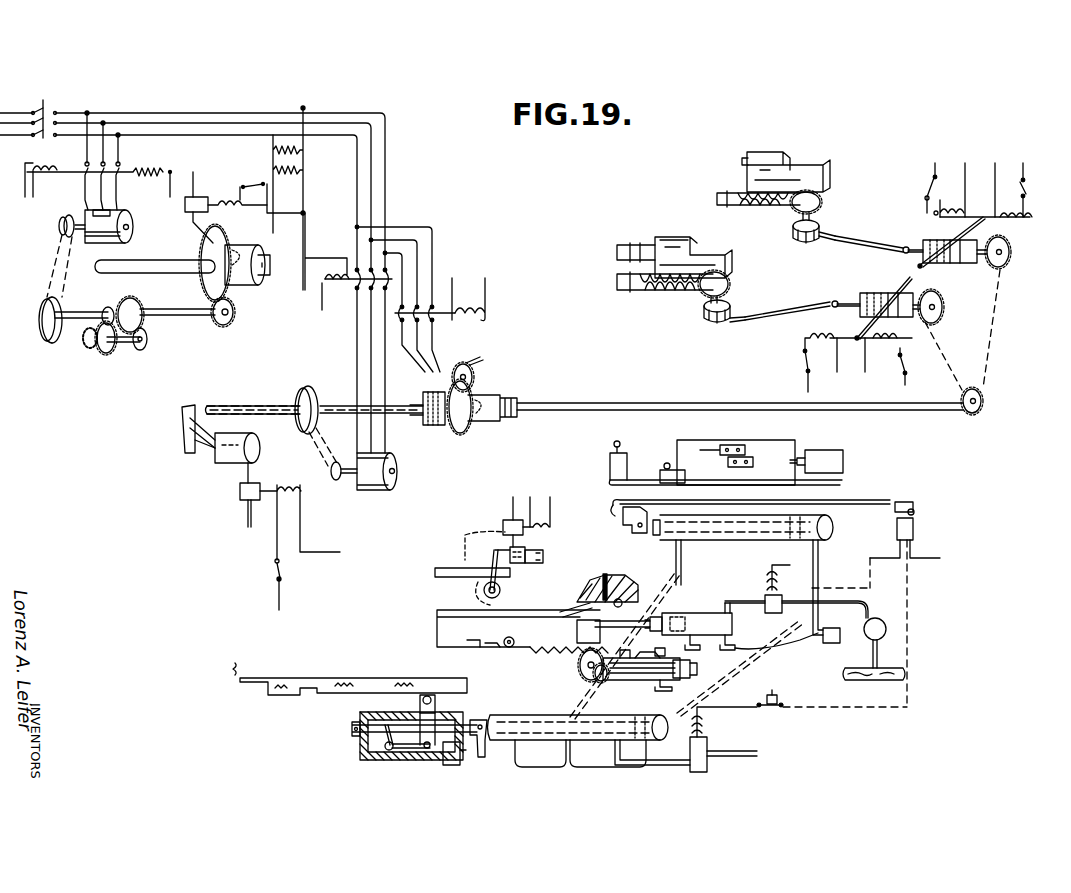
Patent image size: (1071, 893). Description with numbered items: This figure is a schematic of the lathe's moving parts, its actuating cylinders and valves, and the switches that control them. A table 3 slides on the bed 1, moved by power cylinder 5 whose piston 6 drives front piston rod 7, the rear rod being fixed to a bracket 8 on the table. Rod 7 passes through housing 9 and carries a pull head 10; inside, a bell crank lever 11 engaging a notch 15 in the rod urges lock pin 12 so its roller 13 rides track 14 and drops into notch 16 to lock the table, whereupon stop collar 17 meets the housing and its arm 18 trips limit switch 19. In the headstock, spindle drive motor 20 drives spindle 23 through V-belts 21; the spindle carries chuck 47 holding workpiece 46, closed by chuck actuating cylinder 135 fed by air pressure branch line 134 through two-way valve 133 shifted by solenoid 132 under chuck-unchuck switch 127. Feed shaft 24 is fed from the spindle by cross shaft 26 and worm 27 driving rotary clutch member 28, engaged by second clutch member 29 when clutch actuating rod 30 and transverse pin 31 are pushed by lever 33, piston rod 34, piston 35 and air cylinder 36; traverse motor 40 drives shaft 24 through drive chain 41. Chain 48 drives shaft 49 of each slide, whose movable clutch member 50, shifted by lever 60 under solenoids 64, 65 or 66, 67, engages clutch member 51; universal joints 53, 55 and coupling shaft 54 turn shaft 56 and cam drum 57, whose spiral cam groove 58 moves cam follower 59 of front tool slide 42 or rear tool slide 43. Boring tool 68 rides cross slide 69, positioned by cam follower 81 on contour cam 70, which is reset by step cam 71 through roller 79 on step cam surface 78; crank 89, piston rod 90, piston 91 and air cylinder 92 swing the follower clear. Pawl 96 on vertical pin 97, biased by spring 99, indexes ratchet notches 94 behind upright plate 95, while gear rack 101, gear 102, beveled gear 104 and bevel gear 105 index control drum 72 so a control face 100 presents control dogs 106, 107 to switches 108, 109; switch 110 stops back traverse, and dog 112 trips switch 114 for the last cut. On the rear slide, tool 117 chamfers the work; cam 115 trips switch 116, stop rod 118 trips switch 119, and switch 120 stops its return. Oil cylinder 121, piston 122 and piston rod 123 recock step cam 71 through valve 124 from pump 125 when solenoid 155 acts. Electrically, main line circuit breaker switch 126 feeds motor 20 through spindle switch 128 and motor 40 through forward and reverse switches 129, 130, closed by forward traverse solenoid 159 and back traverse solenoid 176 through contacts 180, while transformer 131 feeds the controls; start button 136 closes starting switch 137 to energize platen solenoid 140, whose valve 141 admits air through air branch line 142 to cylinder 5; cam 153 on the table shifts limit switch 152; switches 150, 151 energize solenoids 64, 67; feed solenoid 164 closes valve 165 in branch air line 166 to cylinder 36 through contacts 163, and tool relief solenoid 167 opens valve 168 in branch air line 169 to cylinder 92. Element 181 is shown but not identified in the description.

The bed 1 is at (238, 680).
The table 3 is at (900, 500).
The power cylinder 5 is at (722, 542).
The piston 6 is at (834, 527).
The front piston rod 7 is at (640, 536).
The bracket 8 is at (612, 516).
The housing 9 is at (362, 755).
The pull head 10 is at (352, 724).
The bell crank lever 11 is at (400, 752).
The lock pin 12 is at (428, 750).
The roller 13 is at (423, 694).
The track 14 is at (365, 677).
The notch 15 is at (387, 724).
The notch 16 is at (305, 697).
The stop collar 17 is at (487, 722).
The arm 18 is at (482, 757).
The limit switch 19 is at (454, 766).
The spindle drive motor 20 is at (125, 212).
The V-belts 21 is at (50, 268).
The spindle 23 is at (165, 258).
The feed shaft 24 is at (251, 404).
The cross shaft 26 is at (485, 358).
The worm 27 is at (476, 377).
The rotary clutch member 28 is at (456, 435).
The second clutch member 29 is at (432, 392).
The clutch actuating rod 30 is at (200, 404).
The transverse pin 31 is at (418, 418).
The lever 33 is at (182, 428).
The piston rod 34 is at (205, 455).
The piston 35 is at (250, 436).
The air cylinder 36 is at (238, 468).
The traverse motor 40 is at (372, 492).
The drive chain 41 is at (315, 452).
The front tool slide 42 is at (727, 262).
The rear tool slide 43 is at (825, 178).
The workpiece 46 is at (268, 277).
The chuck 47 is at (240, 290).
The chain 48 is at (995, 320).
The shaft 49 is at (977, 262).
The movable clutch member 50 is at (960, 240).
The clutch member 51 is at (928, 242).
The universal joint 53 is at (900, 252).
The coupling shaft 54 is at (866, 242).
The universal joint 55 is at (838, 232).
The shaft 56 is at (818, 240).
The cam drum 57 is at (725, 190).
The spiral cam groove 58 is at (770, 206).
The cam follower 59 is at (790, 187).
The lever 60 is at (958, 231).
The clutch engage solenoid 64 is at (803, 340).
The solenoid 65 is at (883, 345).
The solenoid 66 is at (950, 192).
The clutch disengage solenoid 67 is at (1024, 224).
The boring tool 68 is at (630, 242).
The cross slide 69 is at (693, 236).
The contour cam 70 is at (440, 580).
The step cam 71 is at (437, 633).
The control drum 72 is at (632, 681).
The step cam surface 78 is at (485, 647).
The roller 79 is at (515, 647).
The cam follower 81 is at (483, 590).
The crank 89 is at (495, 555).
The piston rod 90 is at (505, 554).
The piston 91 is at (543, 553).
The air cylinder 92 is at (524, 563).
The ratchet notches 94 is at (540, 620).
The upright plate 95 is at (508, 620).
The pawl 96 is at (578, 602).
The vertical pin 97 is at (630, 582).
The spring 99 is at (612, 568).
The control faces 100 is at (622, 681).
The gear rack 101 is at (575, 650).
The gear 102 is at (582, 672).
The beveled gear 104 is at (596, 680).
The bevel gear 105 is at (621, 645).
The control dog 106 is at (645, 645).
The control dog 107 is at (667, 651).
The switch 108 is at (700, 612).
The switch 109 is at (778, 644).
The switch 110 is at (829, 643).
The dog 112 is at (667, 691).
The switch 114 is at (693, 667).
The cam 115 is at (742, 470).
The switch 116 is at (665, 481).
The tool 117 is at (745, 158).
The stop rod 118 is at (710, 445).
The switch 119 is at (628, 463).
The switch 120 is at (838, 452).
The oil cylinder 121 is at (733, 612).
The piston 122 is at (678, 616).
The piston rod 123 is at (620, 607).
The valve 124 is at (780, 612).
The pump 125 is at (887, 626).
The main line circuit breaker switch 126 is at (40, 107).
The chuck-unchuck switch 127 is at (252, 180).
The spindle switch 128 is at (123, 172).
The forward switch 129 is at (352, 300).
The reverse switch 130 is at (433, 300).
The transformer 131 is at (301, 160).
The solenoid 132 is at (236, 205).
The two-way valve 133 is at (199, 197).
The air pressure branch line 134 is at (192, 218).
The chuck actuating cylinder 135 is at (206, 283).
The start button 136 is at (770, 695).
The starting switch 137 is at (770, 708).
The platen solenoid 140 is at (708, 720).
The valve 141 is at (708, 768).
The air branch line 142 is at (820, 555).
The switch 150 is at (805, 360).
The switch 151 is at (1030, 190).
The limit switch 152 is at (918, 530).
The cam 153 is at (901, 501).
The solenoid 155 is at (776, 565).
The forward traverse solenoid 159 is at (320, 290).
The contacts 163 is at (272, 572).
The feed solenoid 164 is at (305, 493).
The valve 165 is at (240, 500).
The branch air line 166 is at (254, 478).
The tool relief solenoid 167 is at (542, 505).
The valve 168 is at (503, 524).
The branch air line 169 is at (513, 494).
The back traverse solenoid 176 is at (489, 303).
The contacts 180 is at (925, 195).
The switch 181 is at (906, 362).